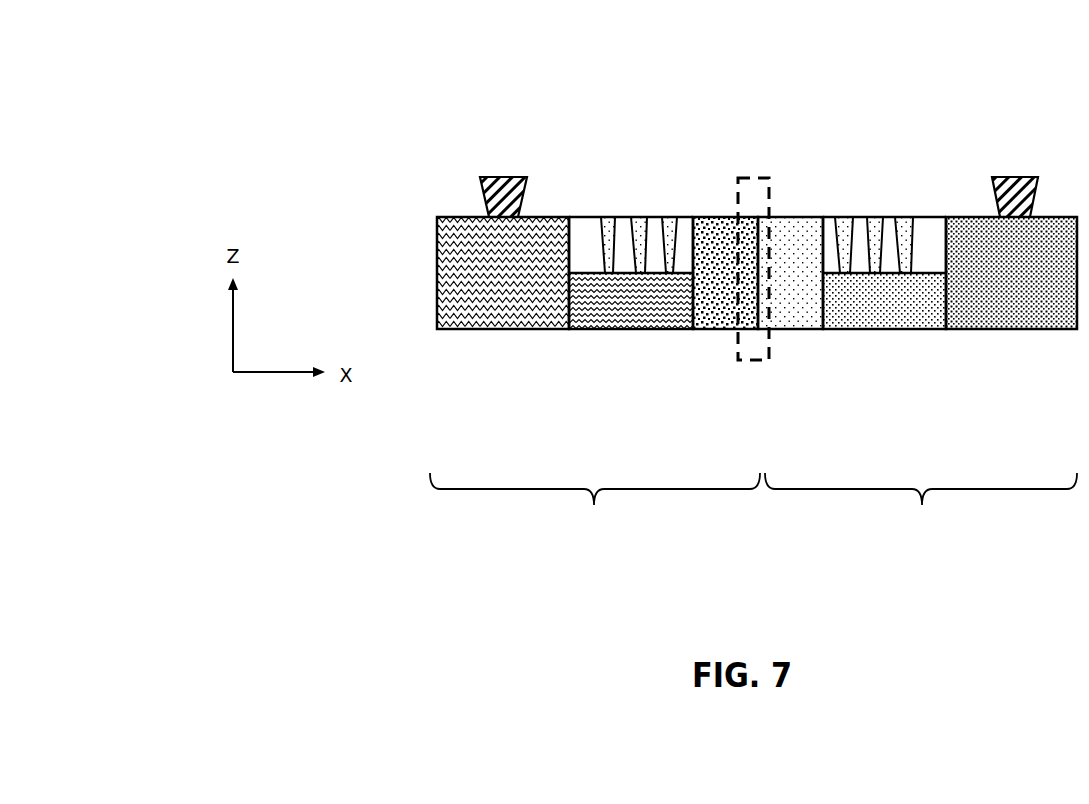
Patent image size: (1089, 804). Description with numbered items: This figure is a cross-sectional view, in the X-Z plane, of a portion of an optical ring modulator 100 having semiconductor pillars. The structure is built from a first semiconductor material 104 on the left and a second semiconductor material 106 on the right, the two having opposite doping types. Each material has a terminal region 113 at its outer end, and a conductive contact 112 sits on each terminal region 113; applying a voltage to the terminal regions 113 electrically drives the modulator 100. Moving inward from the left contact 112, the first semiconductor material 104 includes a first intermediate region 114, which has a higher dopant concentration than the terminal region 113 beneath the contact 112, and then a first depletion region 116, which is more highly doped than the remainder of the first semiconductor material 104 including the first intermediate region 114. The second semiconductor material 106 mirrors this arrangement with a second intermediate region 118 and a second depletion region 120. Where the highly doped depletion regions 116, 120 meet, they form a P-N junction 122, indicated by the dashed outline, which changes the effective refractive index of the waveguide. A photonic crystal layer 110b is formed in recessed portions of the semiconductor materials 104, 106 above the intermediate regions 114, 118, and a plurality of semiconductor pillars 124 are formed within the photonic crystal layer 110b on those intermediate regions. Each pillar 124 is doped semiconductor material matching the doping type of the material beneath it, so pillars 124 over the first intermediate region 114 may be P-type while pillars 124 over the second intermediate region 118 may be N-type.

The optical ring modulator 100 is at (458, 96).
The first semiconductor material 104 is at (595, 507).
The second semiconductor material 106 is at (921, 507).
The photonic crystal layer 110b is at (578, 233).
The conductive contact 112 is at (500, 183).
The terminal region 113 is at (463, 320).
The first intermediate region 114 is at (603, 322).
The first depletion region 116 is at (708, 323).
The second intermediate region 118 is at (900, 313).
The second depletion region 120 is at (788, 320).
The P-N junction 122 is at (748, 178).
The semiconductor pillars 124 is at (637, 233).